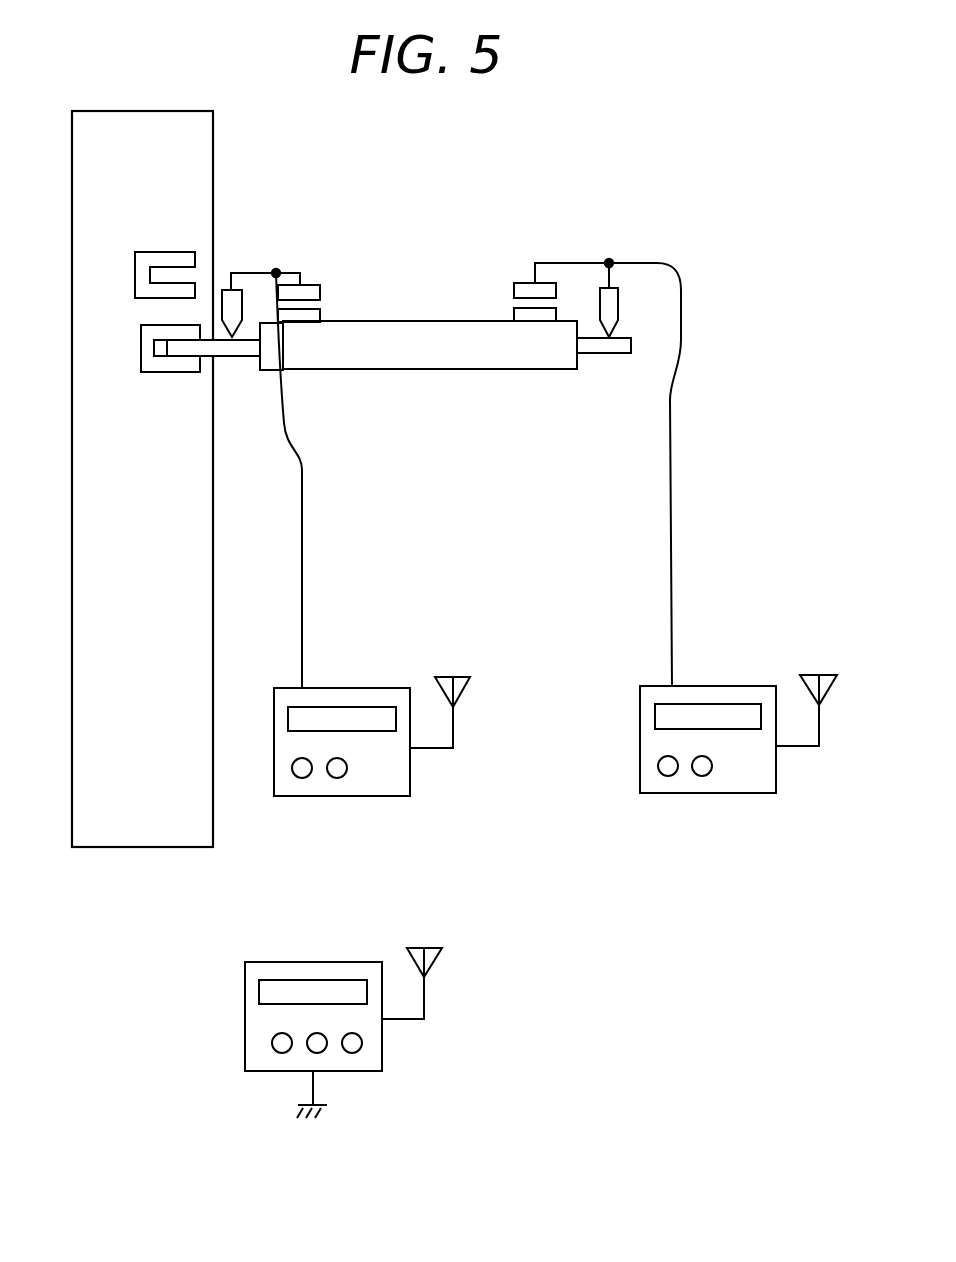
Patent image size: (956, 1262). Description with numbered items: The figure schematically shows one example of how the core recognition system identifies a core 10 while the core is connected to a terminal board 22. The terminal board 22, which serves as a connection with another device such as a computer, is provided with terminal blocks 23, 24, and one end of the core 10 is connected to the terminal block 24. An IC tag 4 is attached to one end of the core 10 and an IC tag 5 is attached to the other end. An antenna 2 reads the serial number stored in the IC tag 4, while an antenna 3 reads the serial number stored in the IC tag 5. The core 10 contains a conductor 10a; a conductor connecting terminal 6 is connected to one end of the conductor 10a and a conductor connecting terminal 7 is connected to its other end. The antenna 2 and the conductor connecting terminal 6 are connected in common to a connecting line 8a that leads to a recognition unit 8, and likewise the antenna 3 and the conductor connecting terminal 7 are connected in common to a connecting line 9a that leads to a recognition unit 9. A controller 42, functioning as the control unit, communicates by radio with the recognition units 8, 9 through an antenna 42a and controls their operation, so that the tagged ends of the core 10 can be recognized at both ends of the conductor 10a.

The terminal board 22 is at (213, 166).
The terminal block 23 is at (143, 275).
The terminal block 24 is at (143, 348).
The core 10 is at (413, 321).
The conductor 10a is at (241, 352).
The antenna 2 is at (316, 292).
The IC tag 4 is at (316, 316).
The antenna 3 is at (518, 290).
The IC tag 5 is at (518, 315).
The conductor connecting terminal 6 is at (235, 307).
The conductor connecting terminal 7 is at (613, 302).
The recognition unit 8 is at (368, 687).
The connecting line 8a is at (303, 505).
The recognition unit 9 is at (738, 685).
The connecting line 9a is at (668, 500).
The controller 42 is at (317, 961).
The antenna 42a is at (435, 948).